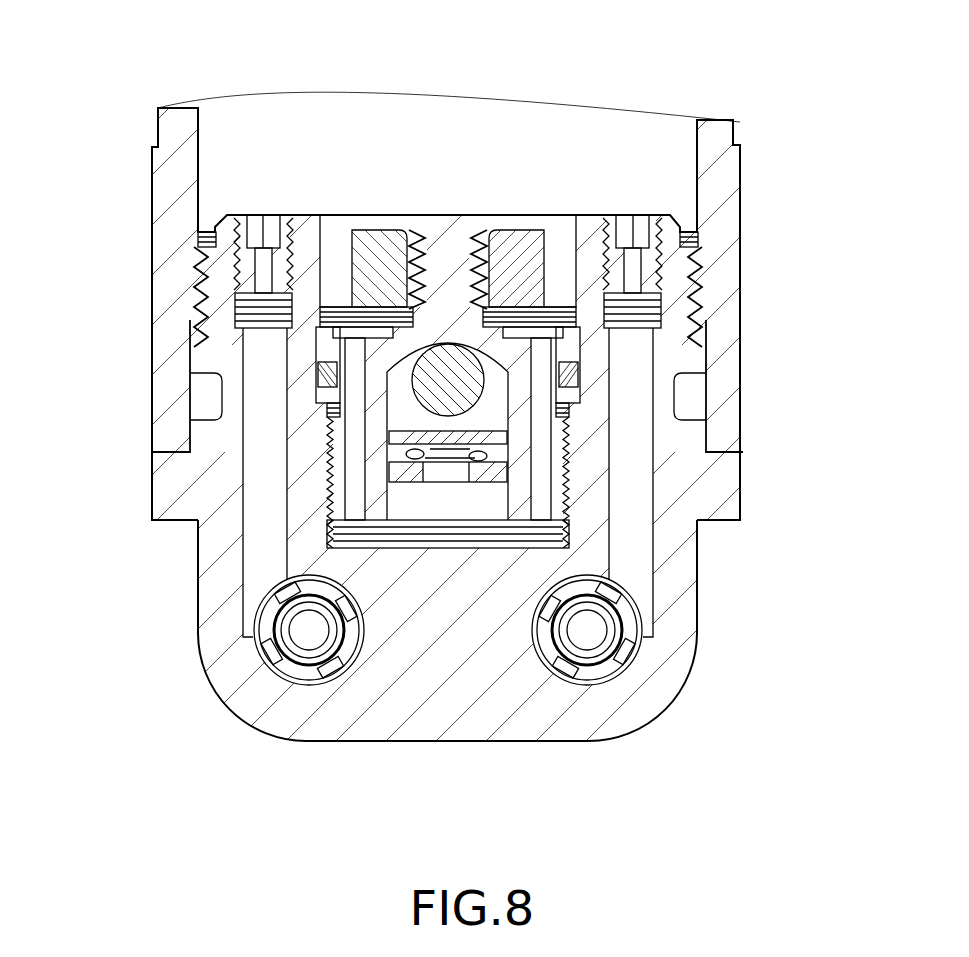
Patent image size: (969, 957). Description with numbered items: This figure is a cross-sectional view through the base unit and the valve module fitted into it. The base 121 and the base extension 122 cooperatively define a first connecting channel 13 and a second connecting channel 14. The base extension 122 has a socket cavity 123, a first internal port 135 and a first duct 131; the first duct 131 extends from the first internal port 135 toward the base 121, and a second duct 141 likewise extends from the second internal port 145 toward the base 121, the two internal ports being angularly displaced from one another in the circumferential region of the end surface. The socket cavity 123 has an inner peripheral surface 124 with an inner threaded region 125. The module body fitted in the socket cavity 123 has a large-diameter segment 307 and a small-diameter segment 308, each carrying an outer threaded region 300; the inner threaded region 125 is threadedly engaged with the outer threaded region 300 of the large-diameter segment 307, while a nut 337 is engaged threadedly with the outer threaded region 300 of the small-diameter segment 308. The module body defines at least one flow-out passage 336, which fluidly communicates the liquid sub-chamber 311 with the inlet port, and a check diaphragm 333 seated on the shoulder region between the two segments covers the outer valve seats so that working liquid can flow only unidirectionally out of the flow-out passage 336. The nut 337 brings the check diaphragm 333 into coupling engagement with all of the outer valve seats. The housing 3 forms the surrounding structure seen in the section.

The valve body 3 is at (727, 170).
The liquid sub-chamber 311 is at (503, 132).
The base 121 is at (430, 627).
The first connecting channel 13 is at (642, 210).
The first internal port 135 is at (623, 210).
The second connecting channel 14 is at (256, 205).
The second internal port 145 is at (248, 213).
The inner peripheral surface 124 is at (290, 283).
The socket cavity 123 is at (335, 212).
The nut 337 is at (392, 237).
The check diaphragm 333 is at (557, 307).
The flow-out passage 336 is at (353, 483).
The inner threaded region 125 is at (340, 467).
The large-diameter segment 307 is at (572, 347).
The second duct 141 is at (258, 407).
The first duct 131 is at (633, 403).
The base extension 122 is at (225, 362).
The outer threaded region 300 is at (325, 520).
The small-diameter segment 308 is at (445, 230).